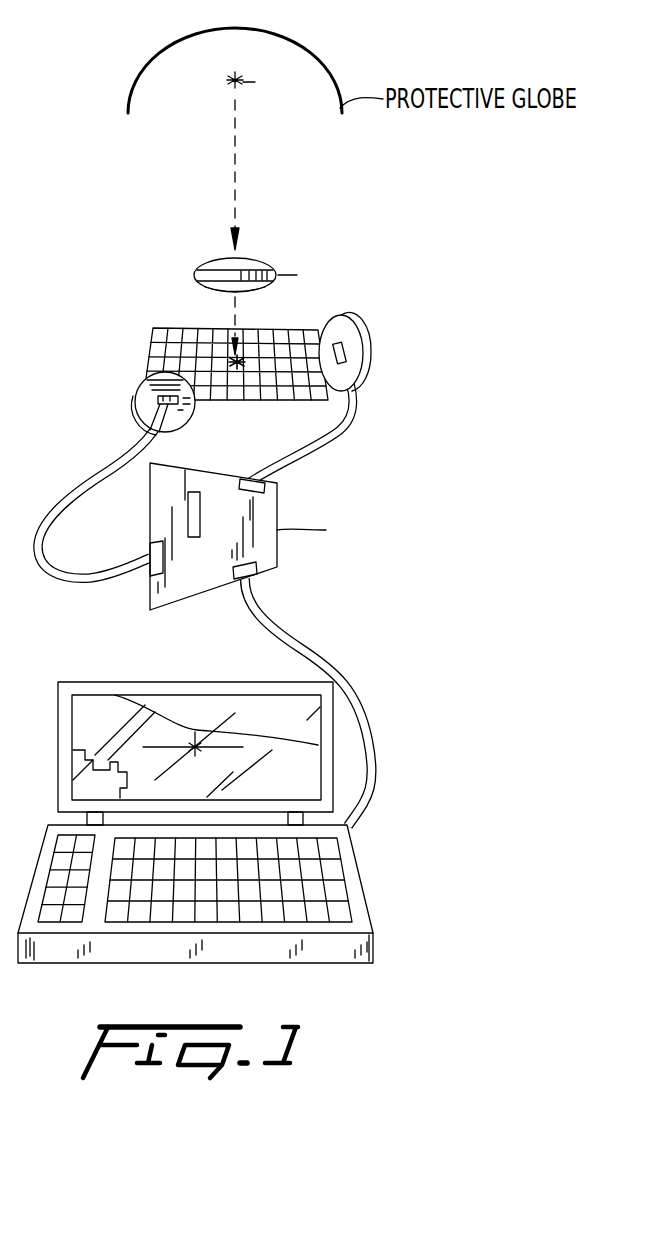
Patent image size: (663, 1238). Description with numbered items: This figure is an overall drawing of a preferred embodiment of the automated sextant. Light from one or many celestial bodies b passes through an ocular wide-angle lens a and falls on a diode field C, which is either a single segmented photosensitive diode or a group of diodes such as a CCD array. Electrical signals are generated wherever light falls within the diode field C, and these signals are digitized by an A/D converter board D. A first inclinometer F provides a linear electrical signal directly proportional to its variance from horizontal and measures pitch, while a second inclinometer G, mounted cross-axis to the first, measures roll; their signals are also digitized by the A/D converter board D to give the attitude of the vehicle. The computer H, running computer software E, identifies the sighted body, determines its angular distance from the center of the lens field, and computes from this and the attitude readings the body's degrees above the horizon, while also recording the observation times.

The ocular wide-angle lens a is at (195, 275).
The celestial body b is at (223, 79).
The diode field C is at (153, 350).
The A/D converter board D is at (150, 595).
The computer software E is at (372, 905).
The first inclinometer F is at (372, 355).
The second inclinometer G is at (135, 400).
The computer H is at (356, 858).